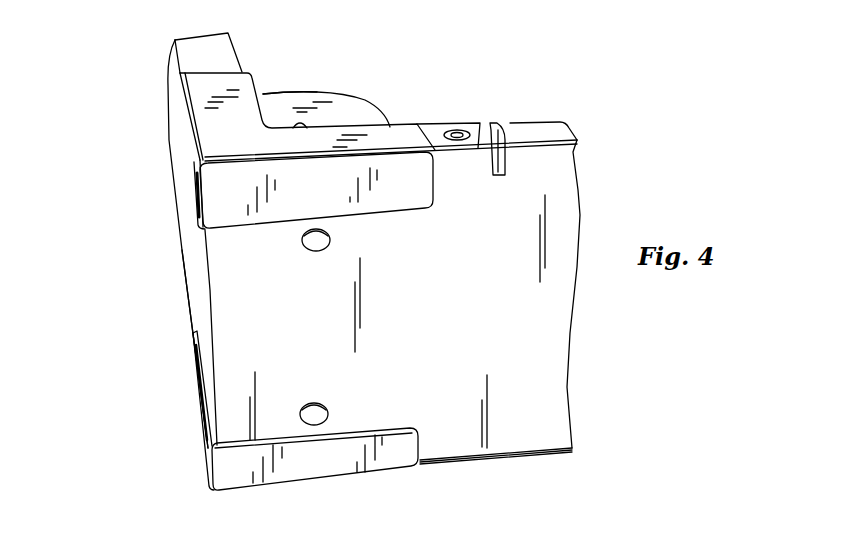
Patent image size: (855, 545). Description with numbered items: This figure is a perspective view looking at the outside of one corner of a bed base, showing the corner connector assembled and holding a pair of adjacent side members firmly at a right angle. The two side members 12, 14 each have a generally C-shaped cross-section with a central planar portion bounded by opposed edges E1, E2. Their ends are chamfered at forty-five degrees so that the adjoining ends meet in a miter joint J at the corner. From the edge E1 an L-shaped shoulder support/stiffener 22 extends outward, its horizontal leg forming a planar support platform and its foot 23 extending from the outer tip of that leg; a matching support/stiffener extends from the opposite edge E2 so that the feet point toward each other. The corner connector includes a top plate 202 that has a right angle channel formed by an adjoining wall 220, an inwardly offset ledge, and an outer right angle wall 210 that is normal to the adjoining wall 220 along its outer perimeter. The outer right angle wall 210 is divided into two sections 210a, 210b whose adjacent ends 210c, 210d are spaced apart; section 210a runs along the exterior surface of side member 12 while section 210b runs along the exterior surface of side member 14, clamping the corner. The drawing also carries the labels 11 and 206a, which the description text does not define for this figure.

The pallet 11 is at (733, 544).
The side member 12 is at (462, 442).
The side member 14 is at (173, 131).
The L-shaped shoulder support/stiffener 22 is at (387, 128).
The foot 23 is at (521, 533).
The top plate 202 is at (313, 89).
The deck board 206a is at (662, 544).
The outer right angle wall 210 is at (400, 203).
The section of outer right angle wall 210a is at (302, 210).
The section of outer right angle wall 210b is at (192, 167).
The adjacent end of wall section 210c is at (200, 197).
The adjacent end of wall section 210d is at (202, 192).
The adjoining wall 220 is at (348, 105).
The edge of planar portion E1 is at (575, 133).
The edge of planar portion E2 is at (552, 452).
The miter joint J is at (213, 372).